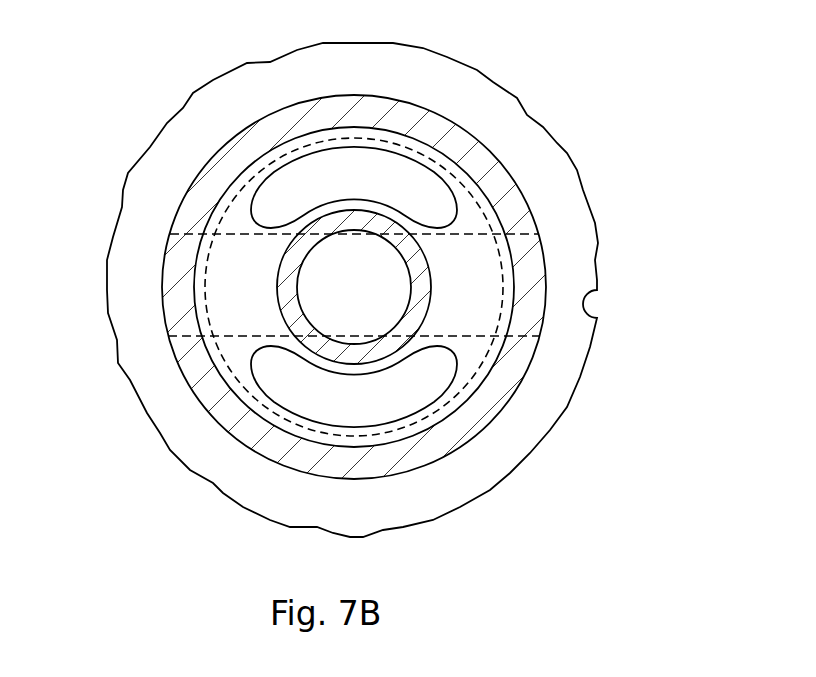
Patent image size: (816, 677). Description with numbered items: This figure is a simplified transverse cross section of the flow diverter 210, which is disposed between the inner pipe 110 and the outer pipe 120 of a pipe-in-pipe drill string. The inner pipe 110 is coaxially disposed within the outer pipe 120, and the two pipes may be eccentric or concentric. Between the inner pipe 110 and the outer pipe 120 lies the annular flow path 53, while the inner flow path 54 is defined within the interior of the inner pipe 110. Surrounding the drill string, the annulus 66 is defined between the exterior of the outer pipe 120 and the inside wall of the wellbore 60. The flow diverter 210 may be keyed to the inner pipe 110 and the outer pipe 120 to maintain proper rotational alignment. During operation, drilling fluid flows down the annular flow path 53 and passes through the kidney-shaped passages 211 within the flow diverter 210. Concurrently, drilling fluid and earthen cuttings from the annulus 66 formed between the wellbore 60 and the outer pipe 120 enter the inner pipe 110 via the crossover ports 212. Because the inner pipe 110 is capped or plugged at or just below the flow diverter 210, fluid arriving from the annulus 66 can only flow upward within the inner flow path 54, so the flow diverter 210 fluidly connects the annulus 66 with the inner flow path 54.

The annular flow path 53 is at (379, 182).
The inner flow path 54 is at (379, 299).
The wellbore 60 is at (598, 320).
The annulus 66 is at (381, 80).
The inner pipe 110 is at (418, 258).
The outer pipe 120 is at (532, 263).
The flow diverter 210 is at (208, 212).
The kidney-shaped passages 211 is at (455, 197).
The crossover ports 212 is at (238, 338).